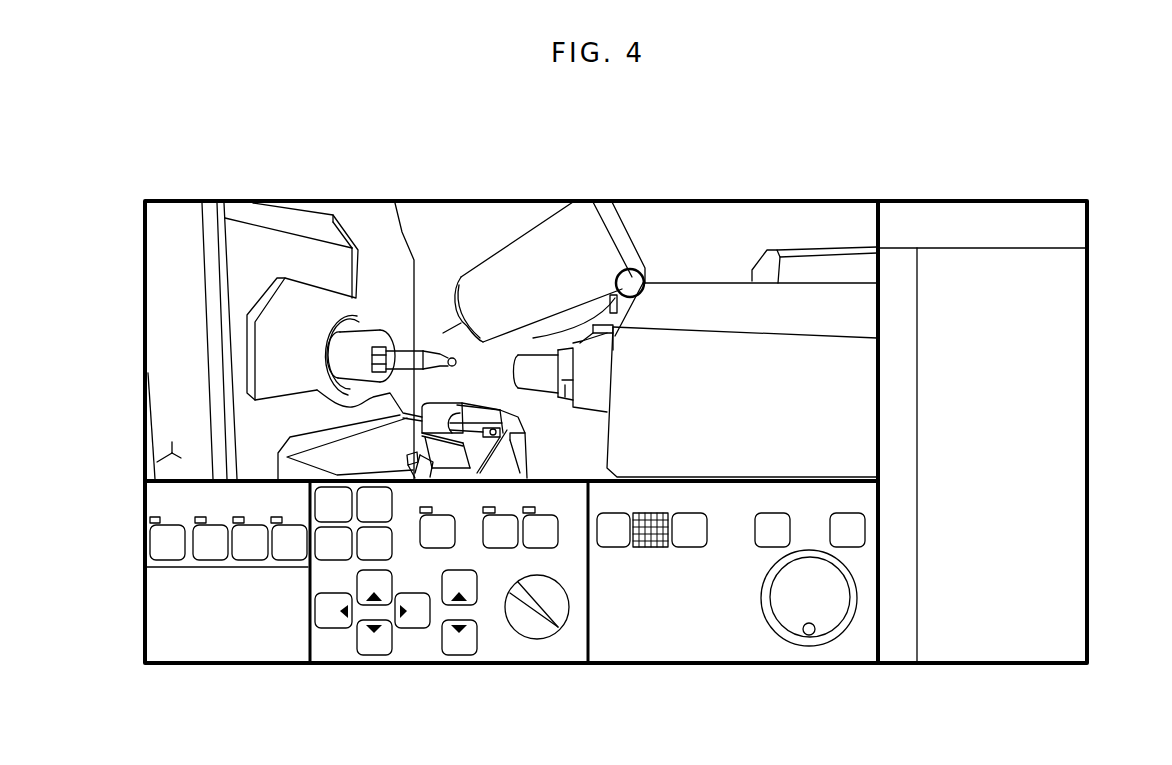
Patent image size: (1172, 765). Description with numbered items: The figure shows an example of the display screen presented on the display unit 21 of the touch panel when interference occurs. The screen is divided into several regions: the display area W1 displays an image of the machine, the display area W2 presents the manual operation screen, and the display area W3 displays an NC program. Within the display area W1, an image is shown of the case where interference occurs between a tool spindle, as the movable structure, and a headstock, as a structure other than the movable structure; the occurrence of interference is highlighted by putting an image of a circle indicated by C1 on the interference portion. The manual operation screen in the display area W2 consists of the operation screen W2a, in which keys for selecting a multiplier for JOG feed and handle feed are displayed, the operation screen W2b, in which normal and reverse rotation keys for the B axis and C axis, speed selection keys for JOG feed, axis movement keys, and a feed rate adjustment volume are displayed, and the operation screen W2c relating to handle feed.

The display unit 21 is at (493, 199).
The circle image C1 is at (632, 270).
The display area for displaying an image W1 is at (160, 335).
The display area for displaying the manual operation screen W2 is at (158, 492).
The operation screen W2a is at (225, 652).
The operation screen W2b is at (415, 652).
The operation screen W2c is at (719, 652).
The display area for displaying an NC program W3 is at (1075, 438).